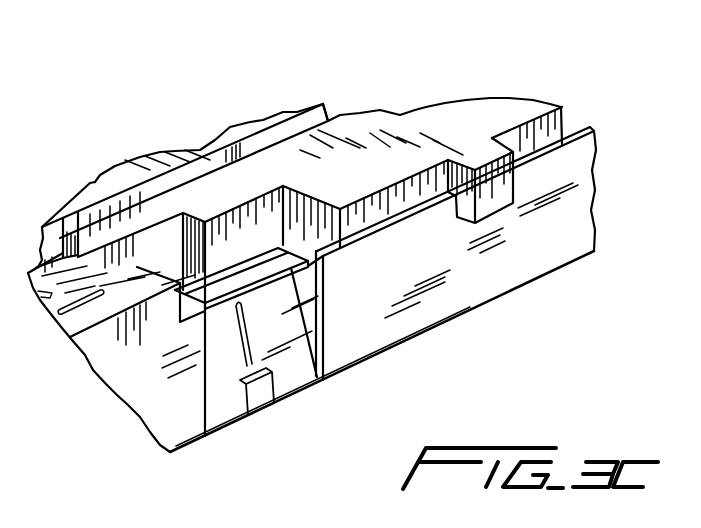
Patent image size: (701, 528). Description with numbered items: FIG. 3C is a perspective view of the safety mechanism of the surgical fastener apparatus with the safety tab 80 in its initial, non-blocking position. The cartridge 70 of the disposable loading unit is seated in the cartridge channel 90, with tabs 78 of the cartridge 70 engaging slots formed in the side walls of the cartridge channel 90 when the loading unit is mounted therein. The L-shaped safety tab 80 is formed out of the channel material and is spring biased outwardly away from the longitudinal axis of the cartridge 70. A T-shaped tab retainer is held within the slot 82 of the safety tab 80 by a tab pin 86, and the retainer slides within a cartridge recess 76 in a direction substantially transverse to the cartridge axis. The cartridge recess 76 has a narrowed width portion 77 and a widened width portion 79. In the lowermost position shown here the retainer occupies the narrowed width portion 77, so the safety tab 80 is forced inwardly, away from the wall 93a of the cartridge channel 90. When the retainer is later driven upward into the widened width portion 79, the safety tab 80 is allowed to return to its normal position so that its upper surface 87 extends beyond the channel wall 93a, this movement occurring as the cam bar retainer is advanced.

The cartridge 70 is at (398, 117).
The cartridge recess 76 is at (226, 238).
The narrowed width portion 77 is at (210, 213).
The tabs 78 is at (480, 168).
The widened width portion 79 is at (157, 264).
The safety tab 80 is at (240, 410).
The slot 82 is at (250, 352).
The tab pin 86 is at (270, 389).
The upper surface 87 is at (277, 252).
The cartridge channel 90 is at (548, 268).
The wall 93a is at (337, 290).